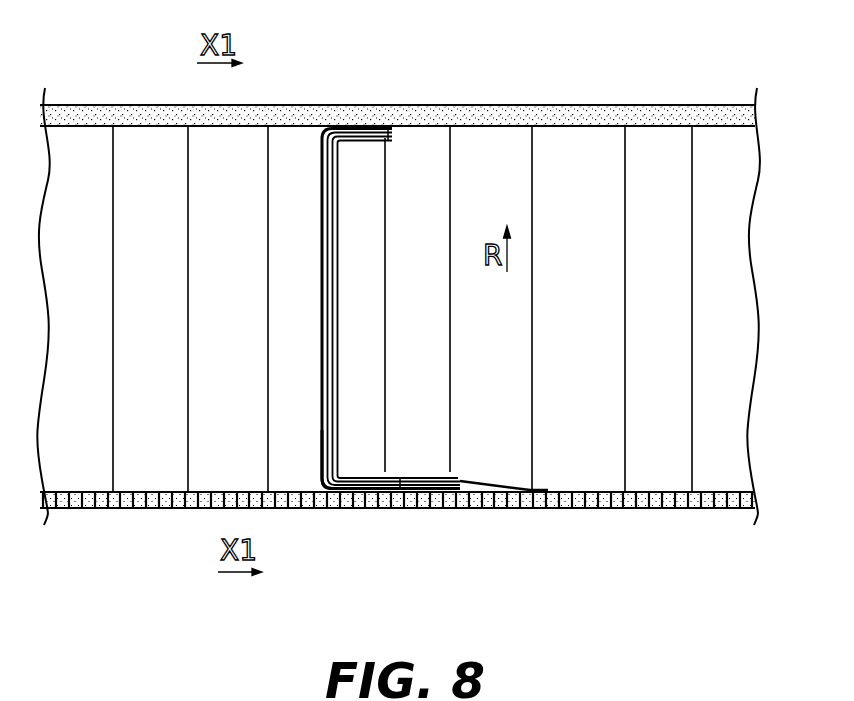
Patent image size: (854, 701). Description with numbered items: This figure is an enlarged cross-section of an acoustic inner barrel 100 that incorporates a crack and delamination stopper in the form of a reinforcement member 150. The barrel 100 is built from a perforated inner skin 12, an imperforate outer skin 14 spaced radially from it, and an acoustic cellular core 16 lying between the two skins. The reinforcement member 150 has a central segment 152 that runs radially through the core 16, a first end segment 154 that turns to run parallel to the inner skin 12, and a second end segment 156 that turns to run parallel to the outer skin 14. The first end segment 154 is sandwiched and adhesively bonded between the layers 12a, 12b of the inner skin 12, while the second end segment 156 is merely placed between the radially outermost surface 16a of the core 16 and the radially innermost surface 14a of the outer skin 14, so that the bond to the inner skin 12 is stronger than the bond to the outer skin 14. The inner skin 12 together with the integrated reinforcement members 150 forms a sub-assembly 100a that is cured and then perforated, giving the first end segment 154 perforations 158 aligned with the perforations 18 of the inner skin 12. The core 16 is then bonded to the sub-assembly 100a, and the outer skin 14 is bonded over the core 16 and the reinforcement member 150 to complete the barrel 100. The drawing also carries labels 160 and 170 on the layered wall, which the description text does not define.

The inner skin 12 is at (533, 509).
The inner skin layer 12a is at (468, 478).
The inner skin layer 12b is at (486, 509).
The outer skin 14 is at (324, 110).
The radially innermost surface of the outer skin 14a is at (401, 128).
The acoustic cellular core 16 is at (238, 336).
The radially outermost surface of the core 16a is at (400, 137).
The perforations 18 is at (358, 485).
The barrel 100 is at (379, 292).
The sub-assembly 100a is at (316, 455).
The reinforcement member 150 is at (343, 335).
The central segment 152 is at (336, 295).
The first end segment 154 is at (408, 480).
The second end segment 156 is at (388, 122).
The perforations 158 is at (422, 497).
The outer layer 160 is at (320, 267).
The second layer 170 is at (334, 250).